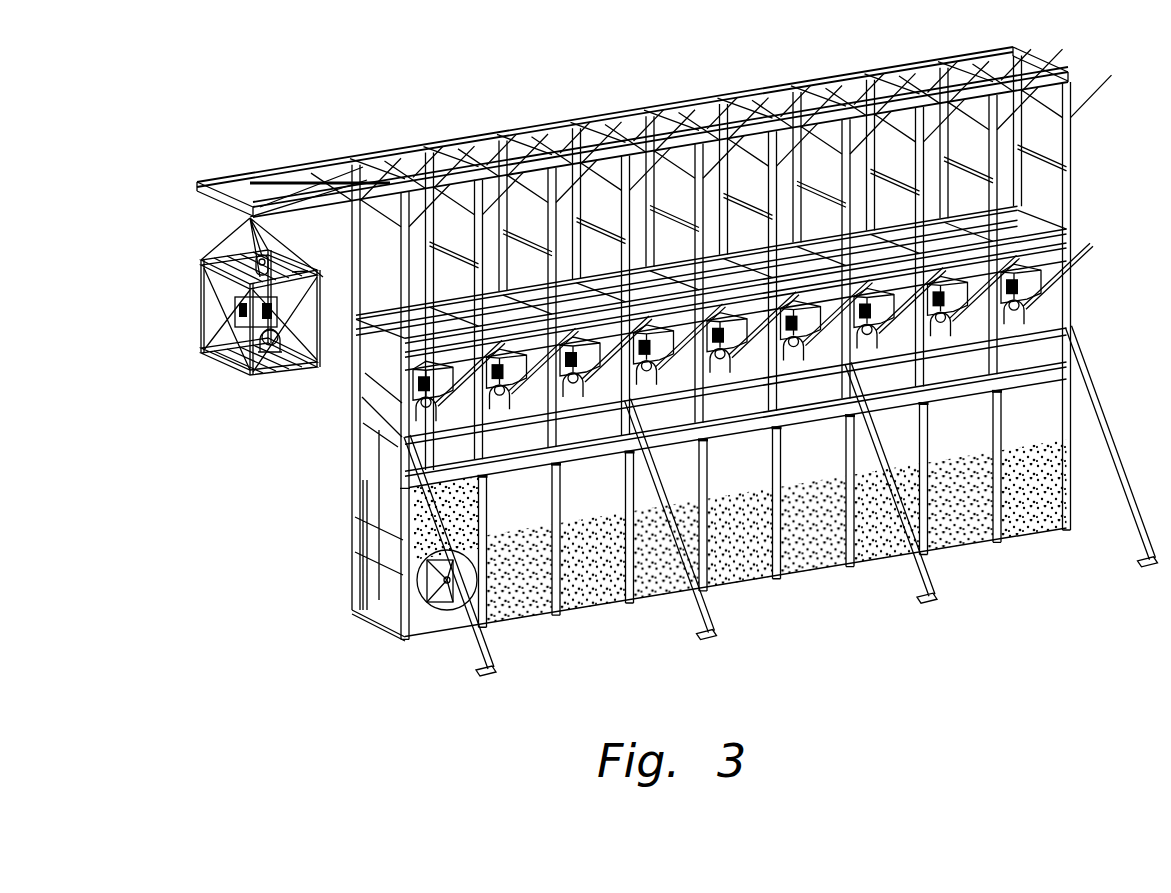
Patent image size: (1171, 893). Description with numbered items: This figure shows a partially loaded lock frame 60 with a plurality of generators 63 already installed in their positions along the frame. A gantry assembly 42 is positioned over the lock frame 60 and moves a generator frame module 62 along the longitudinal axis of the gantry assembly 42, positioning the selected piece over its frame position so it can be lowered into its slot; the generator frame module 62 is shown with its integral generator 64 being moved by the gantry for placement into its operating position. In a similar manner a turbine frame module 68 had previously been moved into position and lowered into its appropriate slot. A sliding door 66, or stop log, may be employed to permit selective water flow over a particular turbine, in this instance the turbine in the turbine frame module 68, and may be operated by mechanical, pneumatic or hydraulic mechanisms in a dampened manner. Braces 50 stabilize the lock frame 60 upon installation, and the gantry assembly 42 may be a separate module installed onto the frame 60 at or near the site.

The lock frame 60 is at (630, 76).
The gantry assembly 42 is at (200, 200).
The generator frame module 62 is at (203, 358).
The generator 64 is at (283, 360).
The generators 63 is at (1025, 312).
The braces 50 is at (1117, 455).
The sliding door 66 is at (467, 517).
The turbine frame module 68 is at (410, 583).